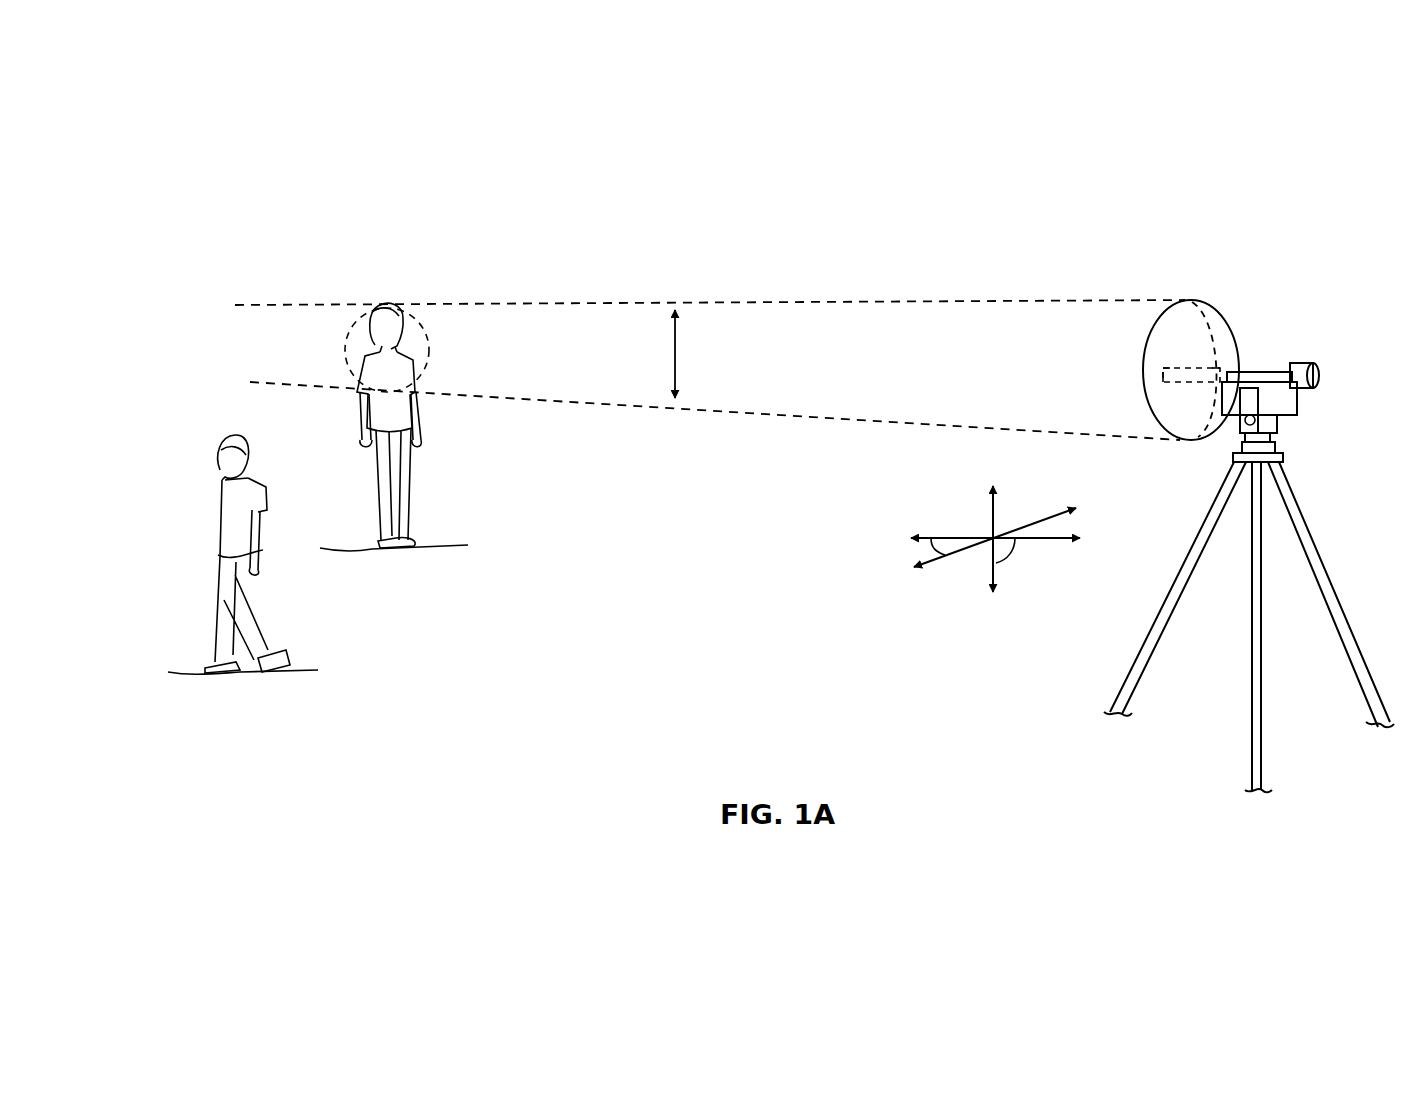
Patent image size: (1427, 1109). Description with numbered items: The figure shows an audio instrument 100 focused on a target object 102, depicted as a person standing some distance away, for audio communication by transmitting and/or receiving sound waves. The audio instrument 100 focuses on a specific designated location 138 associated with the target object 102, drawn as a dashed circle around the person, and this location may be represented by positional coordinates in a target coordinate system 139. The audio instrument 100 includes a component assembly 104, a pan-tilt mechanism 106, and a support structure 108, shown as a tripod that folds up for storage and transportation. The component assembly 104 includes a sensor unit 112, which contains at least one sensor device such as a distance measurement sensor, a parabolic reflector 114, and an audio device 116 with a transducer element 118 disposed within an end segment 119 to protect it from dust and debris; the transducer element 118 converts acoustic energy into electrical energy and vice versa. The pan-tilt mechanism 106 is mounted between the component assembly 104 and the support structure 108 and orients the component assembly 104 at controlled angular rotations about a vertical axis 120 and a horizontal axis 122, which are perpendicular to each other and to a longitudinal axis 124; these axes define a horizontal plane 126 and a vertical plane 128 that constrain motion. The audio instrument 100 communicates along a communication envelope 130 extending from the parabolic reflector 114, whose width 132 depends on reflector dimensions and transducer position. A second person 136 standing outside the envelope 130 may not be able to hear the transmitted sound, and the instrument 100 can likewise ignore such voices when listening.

The audio instrument 100 is at (1288, 268).
The target object 102 is at (362, 372).
The component assembly 104 is at (1260, 347).
The pan-tilt mechanism 106 is at (1280, 427).
The support structure 108 is at (1308, 540).
The sensor unit 112 is at (1283, 405).
The parabolic reflector 114 is at (1206, 364).
The audio device 116 is at (1160, 368).
The transducer element 118 is at (1187, 362).
The end segment 119 is at (1165, 370).
The vertical axis 120 is at (988, 507).
The horizontal axis 122 is at (1020, 522).
The longitudinal axis 124 is at (1048, 544).
The horizontal plane 126 is at (925, 546).
The vertical plane 128 is at (1000, 560).
The communication envelope 130 is at (807, 330).
The width 132 is at (673, 353).
The second person 136 is at (215, 520).
The designated location 138 is at (428, 340).
The target coordinate system 139 is at (962, 576).